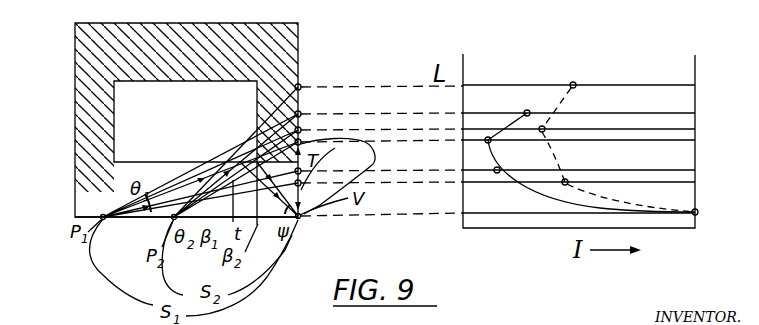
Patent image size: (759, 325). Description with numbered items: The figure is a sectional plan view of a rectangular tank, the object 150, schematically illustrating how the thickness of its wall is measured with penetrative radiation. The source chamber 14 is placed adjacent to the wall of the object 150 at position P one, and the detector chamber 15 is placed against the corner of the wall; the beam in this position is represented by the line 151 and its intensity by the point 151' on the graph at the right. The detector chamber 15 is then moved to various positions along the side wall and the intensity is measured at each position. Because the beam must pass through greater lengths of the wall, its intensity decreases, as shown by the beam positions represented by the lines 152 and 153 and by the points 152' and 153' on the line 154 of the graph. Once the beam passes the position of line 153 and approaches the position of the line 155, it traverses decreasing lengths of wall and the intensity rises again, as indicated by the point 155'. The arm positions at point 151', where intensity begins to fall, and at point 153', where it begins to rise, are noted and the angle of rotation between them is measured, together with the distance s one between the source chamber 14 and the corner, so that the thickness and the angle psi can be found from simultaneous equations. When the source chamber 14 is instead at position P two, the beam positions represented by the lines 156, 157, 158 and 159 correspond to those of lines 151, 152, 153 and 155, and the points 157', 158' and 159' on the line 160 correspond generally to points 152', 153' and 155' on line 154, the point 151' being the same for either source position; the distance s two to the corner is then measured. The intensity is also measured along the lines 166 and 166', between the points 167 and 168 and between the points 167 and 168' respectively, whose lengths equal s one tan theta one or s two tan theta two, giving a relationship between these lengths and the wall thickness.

The object 150 is at (90, 79).
The source chamber 14 is at (104, 205).
The detector chamber 15 is at (302, 218).
The line representing beam of penetrative radiation 151 is at (198, 178).
The line representing beam of penetrating radiation 152 is at (218, 164).
The line representing beam of penetrating radiation 153 is at (207, 146).
The line on the graph 154 is at (582, 204).
The line representing beam position 155 is at (242, 138).
The line representing beam position 156 is at (207, 222).
The line representing beam position 157 is at (267, 239).
The line representing beam position 158 is at (379, 105).
The line representing beam position 159 is at (379, 75).
The line on the graph 160 is at (628, 177).
The line 166 is at (379, 177).
The line 166' is at (397, 163).
The point 167 is at (301, 219).
The point 168 is at (379, 119).
The point 168' is at (379, 96).
The point on the graph 151' is at (719, 209).
The point on the graph 152' is at (583, 176).
The point on the graph 153' is at (514, 150).
The point on the graph 155' is at (518, 113).
The point on the graph 157' is at (607, 161).
The point on the graph 158' is at (575, 135).
The point on the graph 159' is at (585, 93).